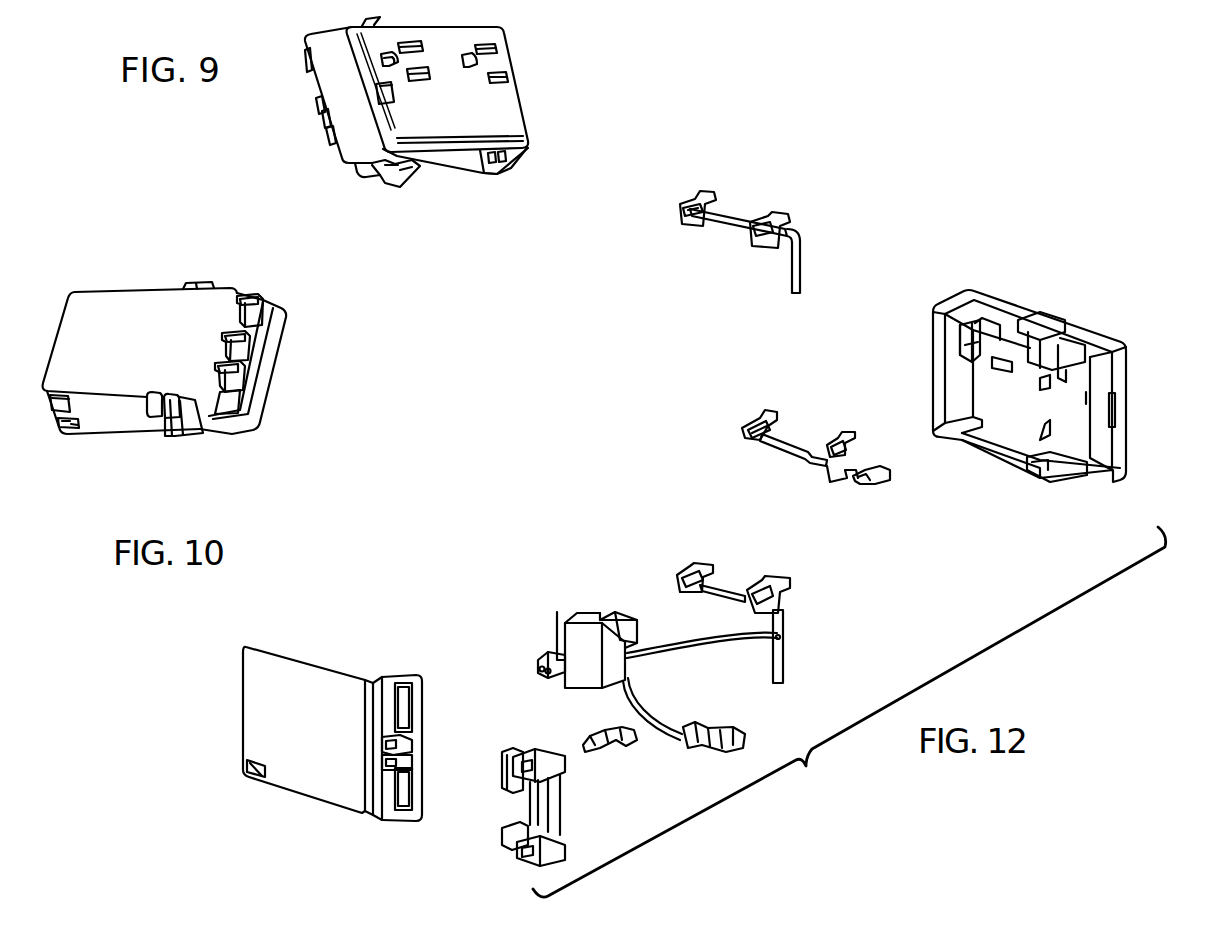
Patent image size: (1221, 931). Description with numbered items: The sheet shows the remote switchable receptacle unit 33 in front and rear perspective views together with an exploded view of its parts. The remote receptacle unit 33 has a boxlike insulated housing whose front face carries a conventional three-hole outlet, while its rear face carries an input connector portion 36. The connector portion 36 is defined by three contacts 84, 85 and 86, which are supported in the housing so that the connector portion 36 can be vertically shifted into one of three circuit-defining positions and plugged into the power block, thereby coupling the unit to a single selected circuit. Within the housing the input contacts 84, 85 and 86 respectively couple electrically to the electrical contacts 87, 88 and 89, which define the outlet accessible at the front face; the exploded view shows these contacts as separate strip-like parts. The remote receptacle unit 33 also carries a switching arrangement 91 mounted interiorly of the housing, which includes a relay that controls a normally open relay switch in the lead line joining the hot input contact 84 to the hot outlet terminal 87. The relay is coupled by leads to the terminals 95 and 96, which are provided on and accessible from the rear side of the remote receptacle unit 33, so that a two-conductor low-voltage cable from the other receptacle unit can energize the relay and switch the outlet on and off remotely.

In FIG. 10, the remote receptacle unit 33 is at (92, 280).
In FIG. 12, the remote receptacle unit 33 is at (849, 712).
In FIG. 10, the input connector portion 36 is at (263, 301).
In FIG. 10, the hot input contact 84 is at (243, 296).
In FIG. 12, the hot input contact 84 is at (745, 750).
In FIG. 10, the contact 85 is at (243, 382).
In FIG. 12, the contact 85 is at (620, 747).
In FIG. 10, the contact 86 is at (250, 348).
In FIG. 12, the contact 86 is at (862, 484).
In FIG. 12, the hot outlet terminal 87 is at (680, 575).
In FIG. 12, the electrical contact 88 is at (683, 205).
In FIG. 12, the electrical contact 89 is at (763, 412).
In FIG. 12, the switching arrangement 91 is at (577, 637).
In FIG. 12, the terminal 95 is at (538, 667).
In FIG. 12, the terminal 96 is at (545, 678).